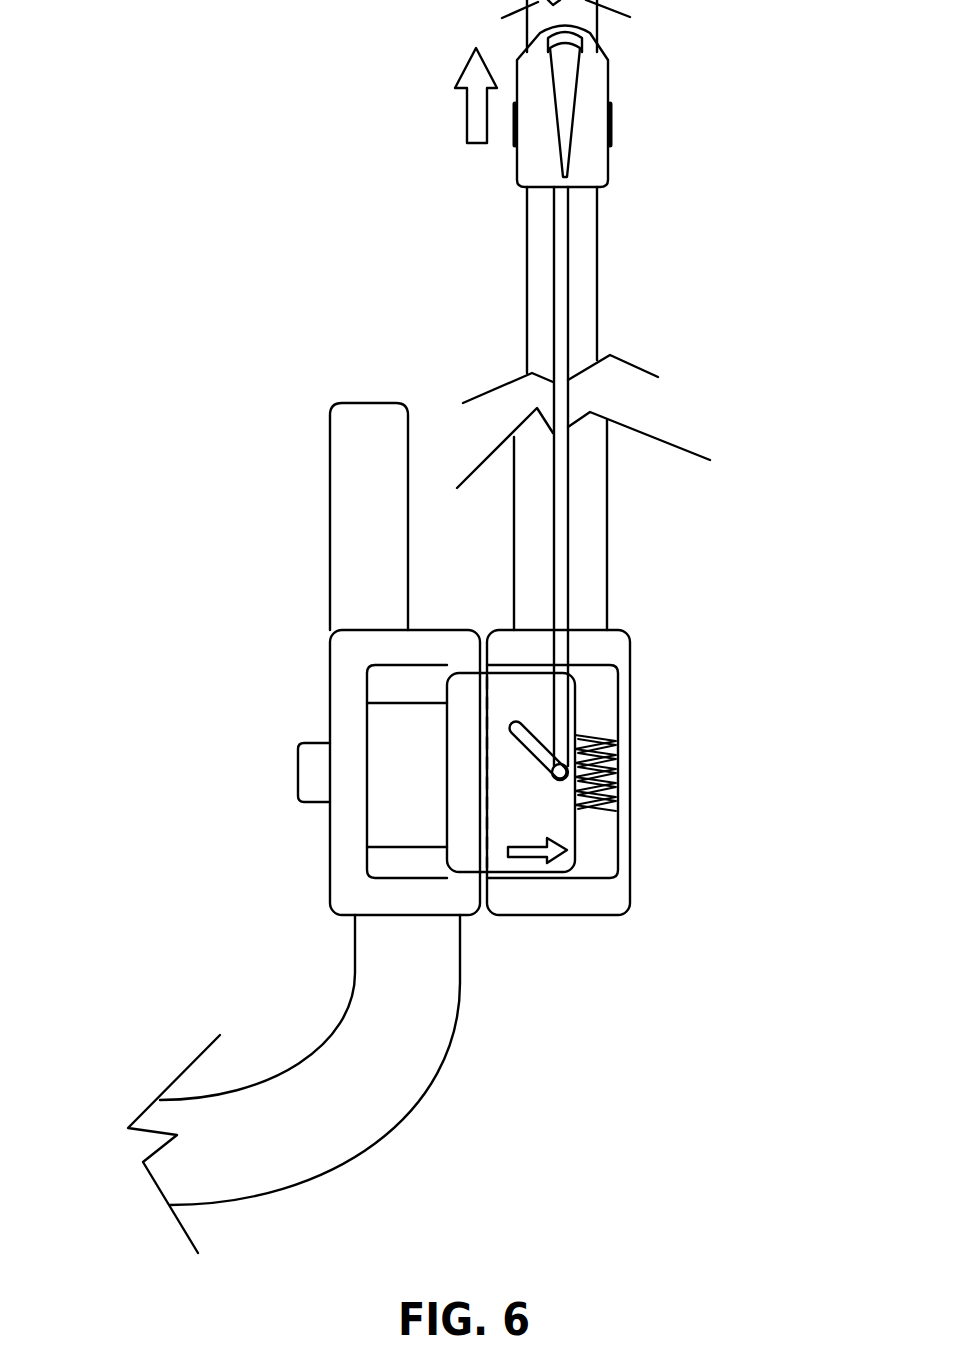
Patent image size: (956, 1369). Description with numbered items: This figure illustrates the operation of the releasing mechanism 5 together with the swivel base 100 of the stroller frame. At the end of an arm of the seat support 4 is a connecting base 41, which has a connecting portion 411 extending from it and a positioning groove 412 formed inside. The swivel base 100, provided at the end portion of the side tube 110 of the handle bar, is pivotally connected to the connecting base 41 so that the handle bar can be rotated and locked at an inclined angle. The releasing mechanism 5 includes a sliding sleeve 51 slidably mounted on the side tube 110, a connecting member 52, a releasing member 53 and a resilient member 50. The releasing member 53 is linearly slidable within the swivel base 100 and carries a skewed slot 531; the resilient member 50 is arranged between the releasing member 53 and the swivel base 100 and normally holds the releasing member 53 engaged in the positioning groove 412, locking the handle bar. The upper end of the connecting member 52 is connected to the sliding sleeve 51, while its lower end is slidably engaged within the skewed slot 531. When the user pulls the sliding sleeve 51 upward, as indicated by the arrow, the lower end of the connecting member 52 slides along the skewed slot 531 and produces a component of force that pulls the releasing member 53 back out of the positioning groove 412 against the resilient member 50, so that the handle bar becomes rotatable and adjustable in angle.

The seat support 4 is at (418, 1063).
The releasing mechanism 5 is at (607, 107).
The connecting base 41 is at (347, 772).
The resilient member 50 is at (600, 812).
The sliding sleeve 51 is at (630, 122).
The connecting member 52 is at (568, 390).
The releasing member 53 is at (460, 683).
The swivel base 100 is at (618, 652).
The side tube 110 is at (593, 23).
The connecting portion 411 is at (345, 448).
The positioning groove 412 is at (387, 830).
The skewed slot 531 is at (523, 732).